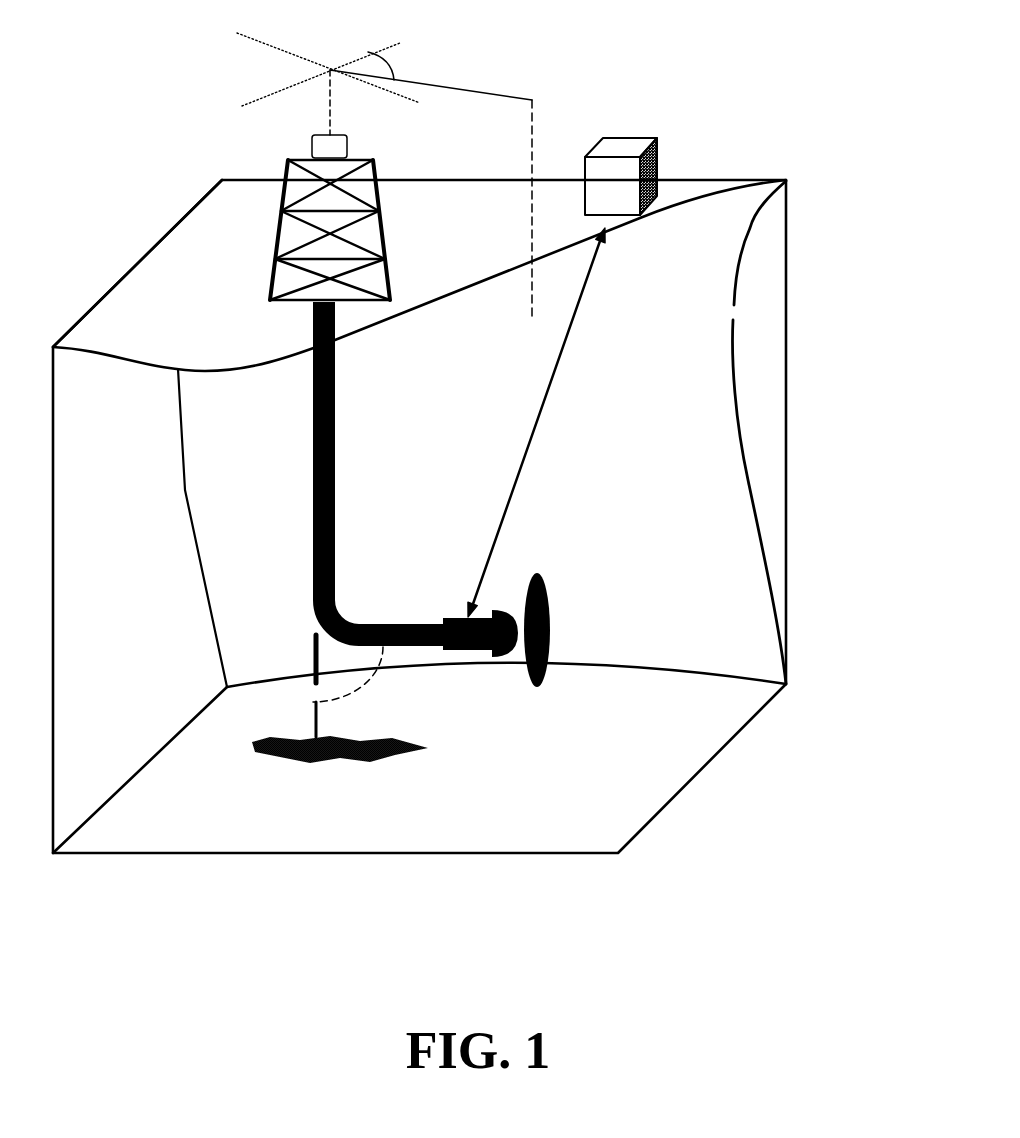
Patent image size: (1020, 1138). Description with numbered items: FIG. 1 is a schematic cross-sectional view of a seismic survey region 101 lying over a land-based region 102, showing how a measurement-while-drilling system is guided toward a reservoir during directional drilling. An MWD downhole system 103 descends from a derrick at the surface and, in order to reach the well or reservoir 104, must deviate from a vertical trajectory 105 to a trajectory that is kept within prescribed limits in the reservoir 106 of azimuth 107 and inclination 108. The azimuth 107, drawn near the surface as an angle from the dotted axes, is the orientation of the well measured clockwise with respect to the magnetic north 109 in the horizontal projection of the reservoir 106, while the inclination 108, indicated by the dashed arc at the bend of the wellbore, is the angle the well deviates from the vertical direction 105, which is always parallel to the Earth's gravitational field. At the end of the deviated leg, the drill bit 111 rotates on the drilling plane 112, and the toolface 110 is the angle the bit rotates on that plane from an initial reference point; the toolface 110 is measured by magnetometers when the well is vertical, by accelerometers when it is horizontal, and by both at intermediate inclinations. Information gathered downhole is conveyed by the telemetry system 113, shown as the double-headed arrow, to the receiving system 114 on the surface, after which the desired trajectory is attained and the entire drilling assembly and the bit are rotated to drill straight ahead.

The seismic survey region 101 is at (743, 50).
The land-based region 102 is at (180, 225).
The MWD downhole system 103 is at (313, 530).
The well or reservoir 104 is at (265, 750).
The vertical trajectory 105 is at (313, 637).
The reservoir 106 is at (738, 376).
The azimuth 107 is at (383, 62).
The inclination 108 is at (363, 687).
The magnetic north 109 is at (397, 38).
The toolface 110 is at (533, 128).
The drill bit 111 is at (495, 653).
The drilling plane 112 is at (540, 687).
The telemetry system 113 is at (540, 415).
The receiving system 114 is at (657, 140).